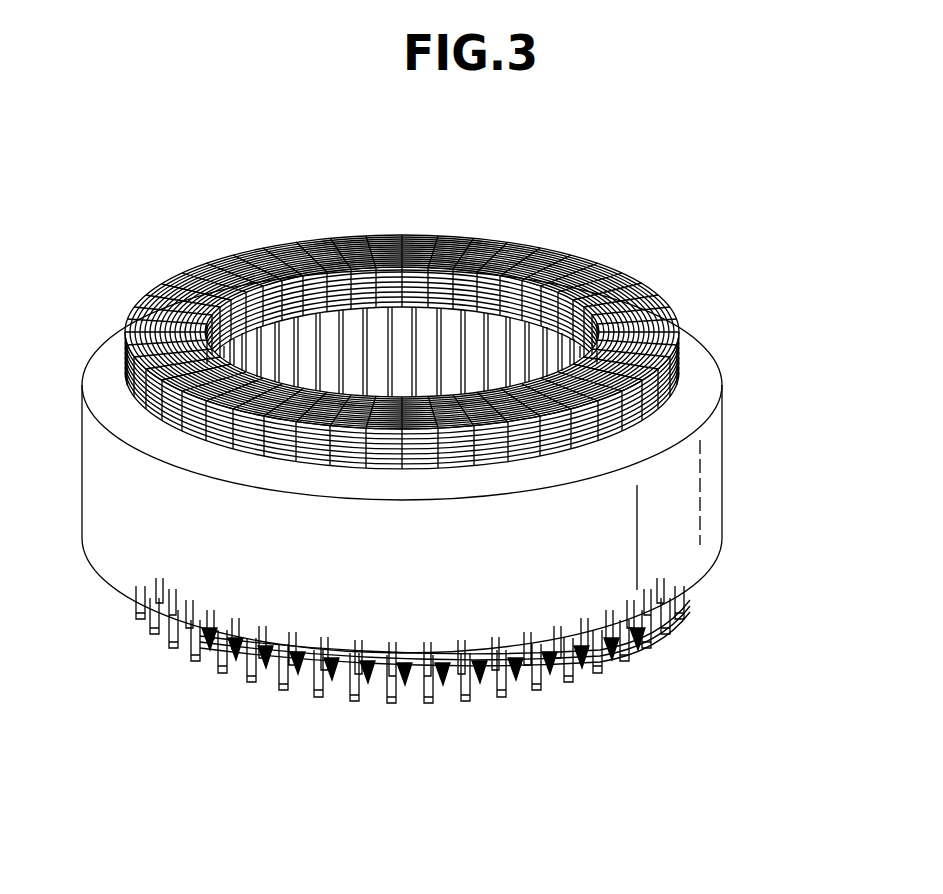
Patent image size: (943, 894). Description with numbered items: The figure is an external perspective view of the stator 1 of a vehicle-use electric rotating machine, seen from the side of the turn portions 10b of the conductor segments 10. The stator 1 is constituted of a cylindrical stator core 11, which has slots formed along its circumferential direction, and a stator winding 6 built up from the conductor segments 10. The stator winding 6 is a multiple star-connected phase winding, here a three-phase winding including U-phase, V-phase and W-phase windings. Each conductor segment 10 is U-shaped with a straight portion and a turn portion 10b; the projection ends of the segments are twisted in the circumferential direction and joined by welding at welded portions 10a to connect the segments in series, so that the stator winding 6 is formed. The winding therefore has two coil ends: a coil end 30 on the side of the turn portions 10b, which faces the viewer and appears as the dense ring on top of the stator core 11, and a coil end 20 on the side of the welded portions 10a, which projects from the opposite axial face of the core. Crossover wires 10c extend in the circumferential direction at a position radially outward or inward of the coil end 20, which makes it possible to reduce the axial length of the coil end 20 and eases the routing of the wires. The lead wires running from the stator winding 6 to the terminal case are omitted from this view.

The stator 1 is at (453, 473).
The stator winding 6 is at (558, 246).
The conductor segments 10 is at (452, 310).
The welded portions 10a is at (388, 702).
The turn portions 10b is at (440, 236).
The crossover wires 10c is at (323, 660).
The stator core 11 is at (700, 545).
The coil end 20 is at (384, 694).
The coil end 30 is at (178, 270).